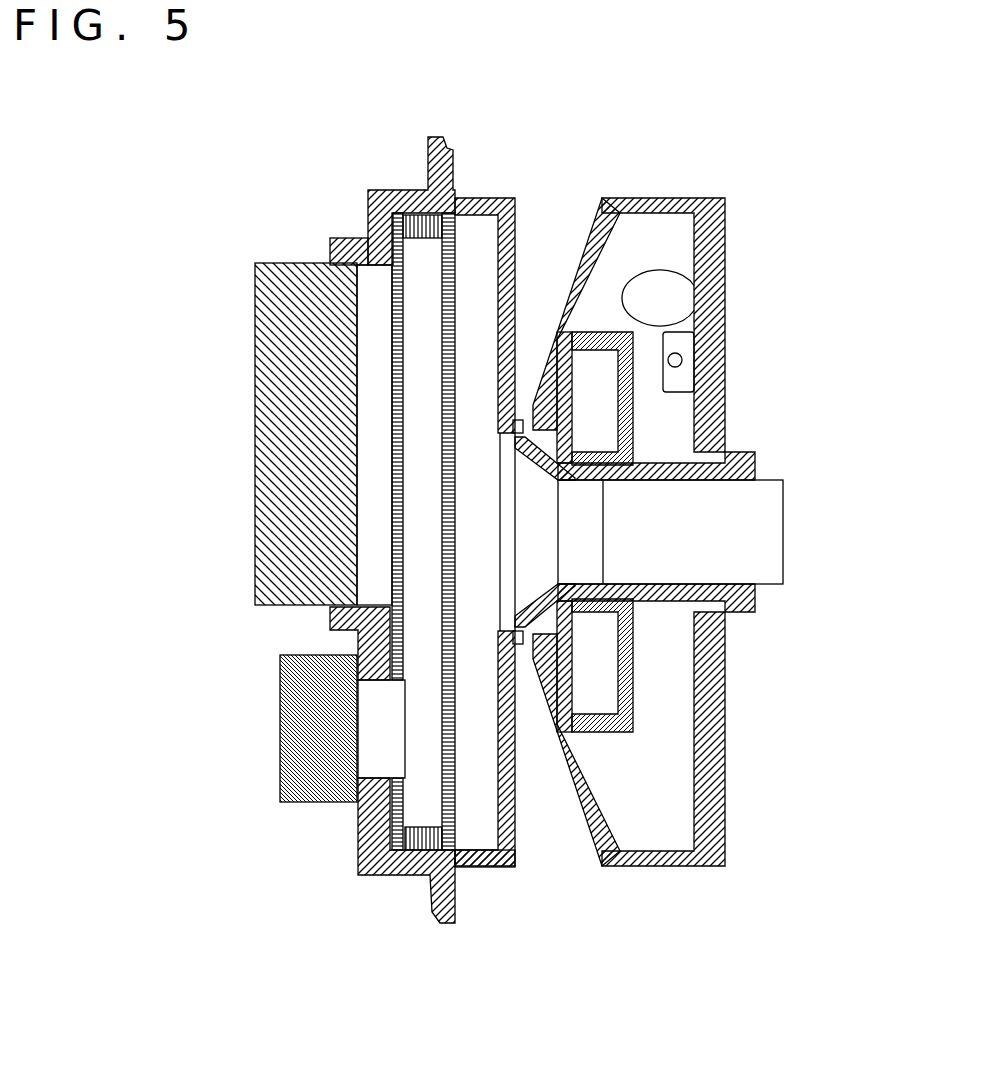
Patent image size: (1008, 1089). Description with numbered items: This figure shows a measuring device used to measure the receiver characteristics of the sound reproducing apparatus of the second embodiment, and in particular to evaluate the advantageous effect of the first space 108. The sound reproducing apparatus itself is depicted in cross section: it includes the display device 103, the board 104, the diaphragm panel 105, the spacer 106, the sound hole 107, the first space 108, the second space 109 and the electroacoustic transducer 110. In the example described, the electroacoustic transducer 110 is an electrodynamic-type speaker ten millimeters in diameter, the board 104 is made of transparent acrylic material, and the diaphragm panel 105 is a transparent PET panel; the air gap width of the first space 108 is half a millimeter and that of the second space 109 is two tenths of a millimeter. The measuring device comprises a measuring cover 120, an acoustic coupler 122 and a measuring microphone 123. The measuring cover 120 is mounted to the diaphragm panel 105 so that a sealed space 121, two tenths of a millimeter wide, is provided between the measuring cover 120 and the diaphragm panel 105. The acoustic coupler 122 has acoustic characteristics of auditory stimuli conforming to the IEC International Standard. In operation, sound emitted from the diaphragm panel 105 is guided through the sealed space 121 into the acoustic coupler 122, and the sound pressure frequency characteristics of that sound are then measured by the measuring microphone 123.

The display device 103 is at (254, 374).
The board 104 is at (392, 258).
The diaphragm panel 105 is at (453, 255).
The spacer 106 is at (425, 223).
The sound hole 107 is at (365, 760).
The first space 108 is at (367, 302).
The second space 109 is at (423, 805).
The electroacoustic transducer 110 is at (280, 683).
The measuring cover 120 is at (515, 233).
The sealed space 121 is at (467, 835).
The acoustic coupler 122 is at (725, 227).
The measuring microphone 123 is at (763, 533).